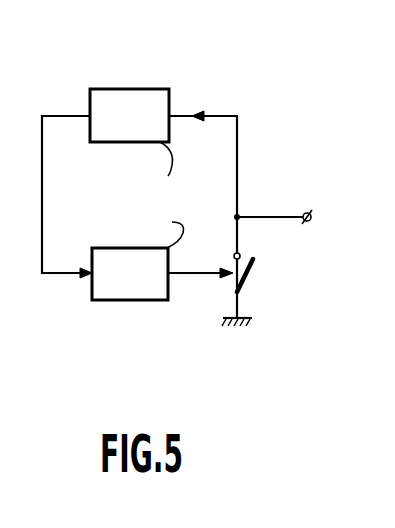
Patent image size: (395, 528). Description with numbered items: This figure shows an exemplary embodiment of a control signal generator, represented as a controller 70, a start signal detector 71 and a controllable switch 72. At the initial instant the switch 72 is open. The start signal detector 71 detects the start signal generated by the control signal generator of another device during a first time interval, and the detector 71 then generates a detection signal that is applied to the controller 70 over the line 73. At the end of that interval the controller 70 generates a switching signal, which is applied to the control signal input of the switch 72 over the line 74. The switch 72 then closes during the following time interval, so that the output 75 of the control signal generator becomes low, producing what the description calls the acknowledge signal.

The controller 70 is at (142, 300).
The start signal detector 71 is at (124, 89).
The controllable switch 72 is at (253, 266).
The line 73 is at (42, 168).
The line 74 is at (188, 274).
The output 75 is at (308, 222).